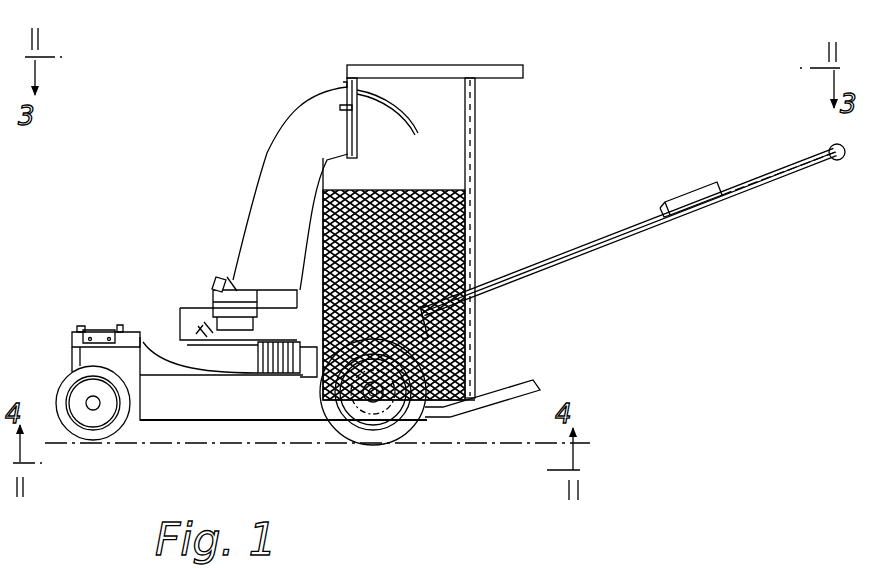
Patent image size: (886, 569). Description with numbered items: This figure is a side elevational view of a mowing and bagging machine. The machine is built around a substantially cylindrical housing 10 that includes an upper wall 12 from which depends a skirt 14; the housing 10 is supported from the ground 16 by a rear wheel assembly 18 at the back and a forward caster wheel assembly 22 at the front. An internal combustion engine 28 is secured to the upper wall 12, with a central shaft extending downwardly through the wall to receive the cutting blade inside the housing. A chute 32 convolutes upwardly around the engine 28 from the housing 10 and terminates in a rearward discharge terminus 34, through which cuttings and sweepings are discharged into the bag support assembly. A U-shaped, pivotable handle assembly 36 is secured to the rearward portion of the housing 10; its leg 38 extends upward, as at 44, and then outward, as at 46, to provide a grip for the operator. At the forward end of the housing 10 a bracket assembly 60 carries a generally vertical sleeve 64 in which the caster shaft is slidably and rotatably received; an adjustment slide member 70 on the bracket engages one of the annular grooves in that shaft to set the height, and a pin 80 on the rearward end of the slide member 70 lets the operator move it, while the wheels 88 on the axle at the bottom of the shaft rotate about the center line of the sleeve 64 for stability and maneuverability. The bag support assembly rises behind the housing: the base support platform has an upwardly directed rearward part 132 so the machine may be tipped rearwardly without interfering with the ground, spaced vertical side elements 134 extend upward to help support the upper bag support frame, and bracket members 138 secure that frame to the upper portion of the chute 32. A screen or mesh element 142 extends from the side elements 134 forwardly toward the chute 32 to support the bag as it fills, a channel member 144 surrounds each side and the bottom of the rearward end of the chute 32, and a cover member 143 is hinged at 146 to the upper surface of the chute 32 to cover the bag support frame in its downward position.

The housing 10 is at (193, 424).
The upper wall 12 is at (301, 378).
The skirt 14 is at (238, 423).
The ground 16 is at (459, 448).
The rear wheel assembly 18 is at (376, 447).
The forward caster wheel assembly 22 is at (67, 330).
The internal combustion engine 28 is at (213, 278).
The chute 32 is at (268, 144).
The rearward discharge terminus 34 is at (388, 112).
The handle assembly 36 is at (574, 246).
The leg 38 is at (634, 234).
The upward extension of handle leg 44 is at (763, 172).
The outward extension of handle leg 46 is at (838, 161).
The bracket assembly 60 is at (142, 340).
The vertical sleeve 64 is at (72, 360).
The adjustment slide member 70 is at (119, 327).
The pin 80 is at (124, 328).
The wheel 88 is at (88, 441).
The upwardly directed rearward part 132 is at (538, 380).
The vertical side element 134 is at (478, 125).
The bracket member 138 is at (359, 124).
The screen or mesh element 142 is at (459, 211).
The cover member 143 is at (518, 72).
The channel member 144 is at (357, 159).
The hinge 146 is at (343, 84).